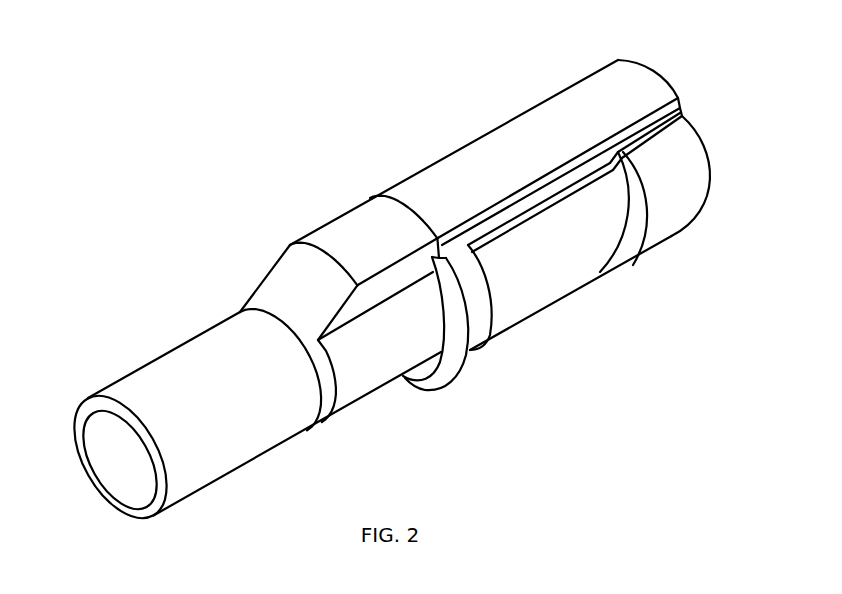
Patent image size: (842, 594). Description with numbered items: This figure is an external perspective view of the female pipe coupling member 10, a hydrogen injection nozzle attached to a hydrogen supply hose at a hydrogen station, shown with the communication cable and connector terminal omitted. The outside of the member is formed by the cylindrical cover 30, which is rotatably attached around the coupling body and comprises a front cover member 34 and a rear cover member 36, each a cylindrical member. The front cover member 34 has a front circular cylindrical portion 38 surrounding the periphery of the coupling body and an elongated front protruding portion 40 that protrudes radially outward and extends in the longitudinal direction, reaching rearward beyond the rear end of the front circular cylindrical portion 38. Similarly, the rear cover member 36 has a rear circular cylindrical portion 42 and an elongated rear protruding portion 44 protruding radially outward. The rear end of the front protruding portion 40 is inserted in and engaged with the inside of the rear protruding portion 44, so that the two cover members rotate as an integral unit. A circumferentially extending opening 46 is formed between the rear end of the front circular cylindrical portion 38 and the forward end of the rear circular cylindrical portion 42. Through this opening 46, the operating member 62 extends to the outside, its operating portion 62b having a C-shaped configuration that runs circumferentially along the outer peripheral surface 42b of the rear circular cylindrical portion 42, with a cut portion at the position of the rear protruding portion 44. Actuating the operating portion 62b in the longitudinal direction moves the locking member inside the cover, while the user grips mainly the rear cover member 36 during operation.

The female pipe coupling member 10 is at (480, 102).
The cylindrical cover 30 is at (420, 60).
The front cover member 34 is at (466, 140).
The rear cover member 36 is at (338, 213).
The front circular cylindrical portion 38 is at (618, 232).
The front protruding portion 40 is at (547, 132).
The rear circular cylindrical portion 42 is at (362, 367).
The outer peripheral surface 42b is at (437, 325).
The rear protruding portion 44 is at (333, 243).
The opening 46 is at (483, 347).
The operating member 62 is at (480, 300).
The operating portion 62b is at (465, 338).